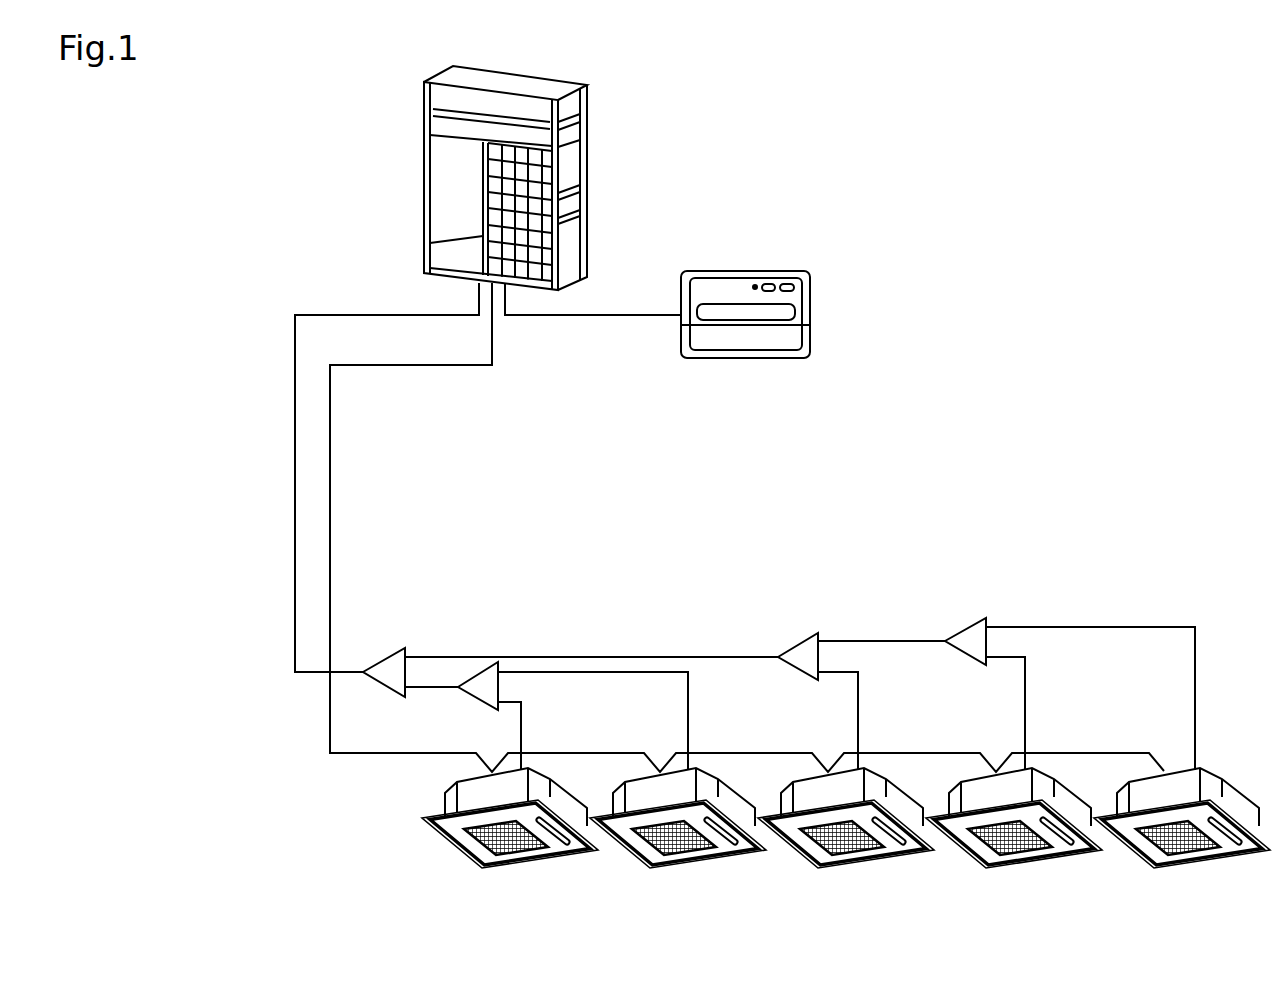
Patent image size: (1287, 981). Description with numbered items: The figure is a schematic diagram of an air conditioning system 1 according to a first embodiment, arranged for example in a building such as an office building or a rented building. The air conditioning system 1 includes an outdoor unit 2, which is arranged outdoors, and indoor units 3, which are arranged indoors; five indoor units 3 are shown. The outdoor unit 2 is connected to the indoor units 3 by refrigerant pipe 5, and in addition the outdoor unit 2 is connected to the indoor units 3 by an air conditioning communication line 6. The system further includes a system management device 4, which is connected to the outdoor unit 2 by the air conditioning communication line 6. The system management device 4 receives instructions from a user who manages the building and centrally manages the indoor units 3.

The air conditioning system 1 is at (1027, 168).
The outdoor unit 2 is at (588, 120).
The indoor unit 3 is at (545, 868).
The system management device 4 is at (748, 268).
The refrigerant pipe 5 is at (295, 492).
The air conditioning communication line 6 is at (330, 558).